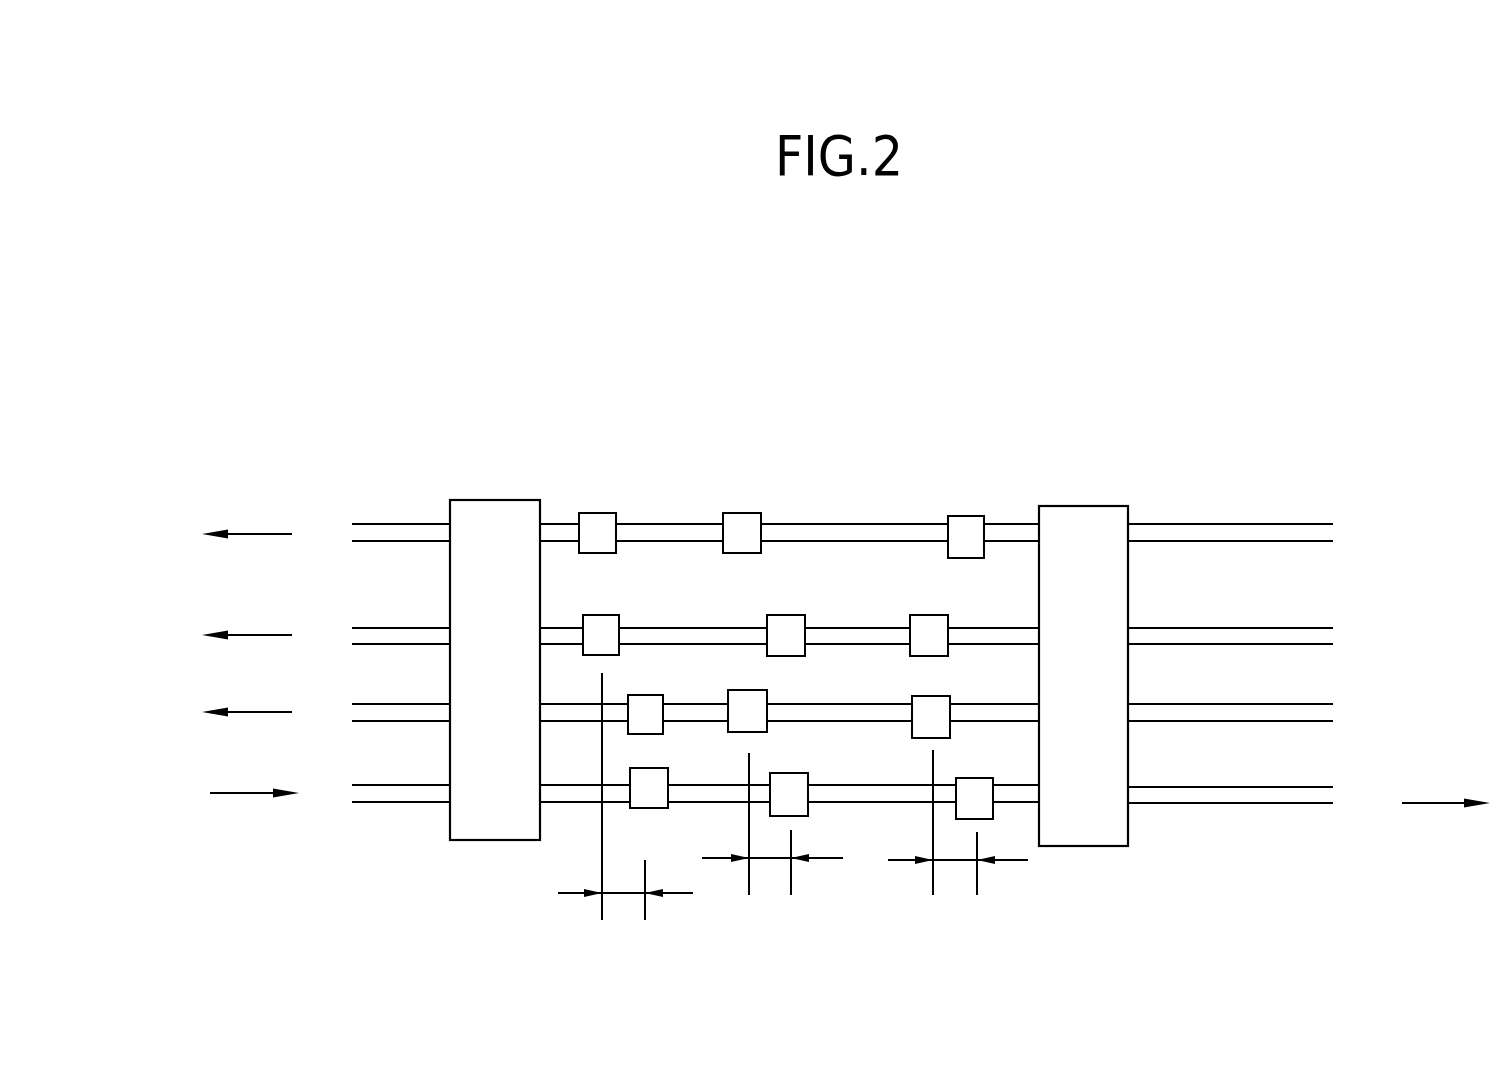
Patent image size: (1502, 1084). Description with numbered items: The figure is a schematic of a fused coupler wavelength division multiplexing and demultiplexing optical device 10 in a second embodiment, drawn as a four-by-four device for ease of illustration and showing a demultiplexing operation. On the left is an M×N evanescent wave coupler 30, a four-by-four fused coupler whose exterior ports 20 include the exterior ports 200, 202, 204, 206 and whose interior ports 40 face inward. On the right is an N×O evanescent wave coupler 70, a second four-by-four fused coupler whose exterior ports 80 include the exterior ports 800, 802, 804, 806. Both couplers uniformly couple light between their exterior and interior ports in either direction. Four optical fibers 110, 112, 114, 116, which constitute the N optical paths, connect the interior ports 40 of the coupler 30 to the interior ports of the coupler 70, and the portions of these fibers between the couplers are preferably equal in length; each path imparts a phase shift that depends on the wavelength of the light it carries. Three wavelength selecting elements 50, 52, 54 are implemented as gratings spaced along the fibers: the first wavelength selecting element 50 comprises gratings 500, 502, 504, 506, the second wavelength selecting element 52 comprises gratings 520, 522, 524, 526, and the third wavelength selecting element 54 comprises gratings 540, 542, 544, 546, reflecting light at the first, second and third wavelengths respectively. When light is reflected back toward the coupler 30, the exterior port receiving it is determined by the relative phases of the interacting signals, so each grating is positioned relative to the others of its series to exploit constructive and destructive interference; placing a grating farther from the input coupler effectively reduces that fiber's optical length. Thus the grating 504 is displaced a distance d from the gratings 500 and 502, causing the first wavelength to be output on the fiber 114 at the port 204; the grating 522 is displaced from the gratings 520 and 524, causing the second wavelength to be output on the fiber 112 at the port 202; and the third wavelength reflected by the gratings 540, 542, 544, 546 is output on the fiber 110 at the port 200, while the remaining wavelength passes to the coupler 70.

The optical device 10 is at (786, 320).
The exterior ports 20 is at (362, 466).
The M×N evanescent wave coupler 30 is at (488, 500).
The interior ports 40 is at (550, 495).
The wavelength selecting element 50 is at (600, 445).
The wavelength selecting element 52 is at (737, 445).
The wavelength selecting element 54 is at (959, 445).
The N×O evanescent wave coupler 70 is at (1090, 506).
The exterior ports 80 is at (1165, 826).
The optical fiber 110 is at (848, 536).
The optical fiber 112 is at (822, 636).
The optical fiber 114 is at (808, 718).
The optical fiber 116 is at (827, 800).
The exterior port 200 is at (401, 517).
The exterior port 202 is at (401, 620).
The exterior port 204 is at (401, 697).
The exterior port 206 is at (401, 778).
The grating 500 is at (598, 516).
The grating 502 is at (602, 618).
The grating 504 is at (645, 698).
The grating 506 is at (649, 773).
The grating 520 is at (742, 516).
The grating 522 is at (786, 618).
The grating 524 is at (747, 695).
The grating 526 is at (789, 777).
The grating 540 is at (966, 521).
The grating 542 is at (929, 618).
The grating 544 is at (931, 700).
The grating 546 is at (974, 780).
The exterior port 800 is at (1230, 515).
The exterior port 802 is at (1230, 619).
The exterior port 804 is at (1230, 695).
The exterior port 806 is at (1230, 778).